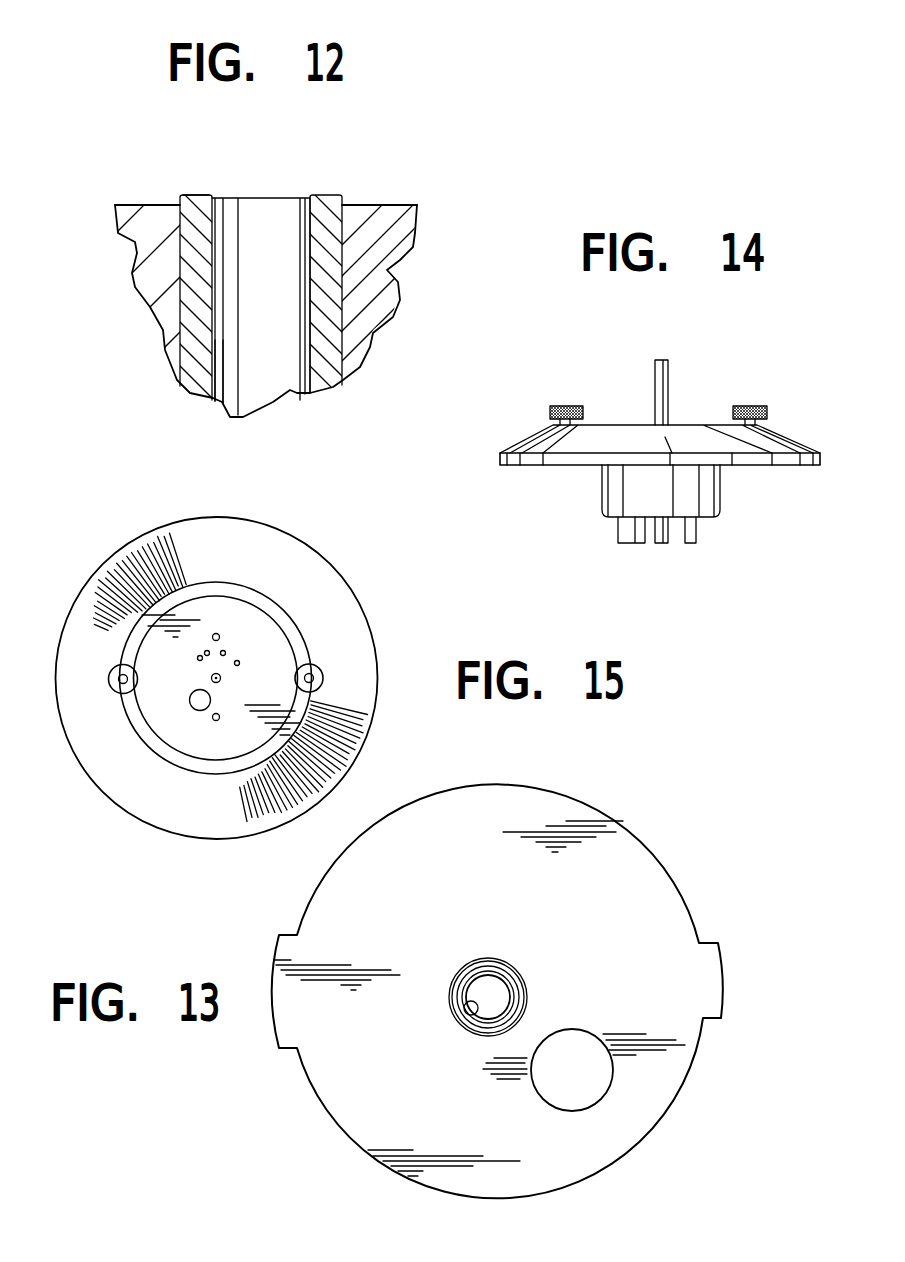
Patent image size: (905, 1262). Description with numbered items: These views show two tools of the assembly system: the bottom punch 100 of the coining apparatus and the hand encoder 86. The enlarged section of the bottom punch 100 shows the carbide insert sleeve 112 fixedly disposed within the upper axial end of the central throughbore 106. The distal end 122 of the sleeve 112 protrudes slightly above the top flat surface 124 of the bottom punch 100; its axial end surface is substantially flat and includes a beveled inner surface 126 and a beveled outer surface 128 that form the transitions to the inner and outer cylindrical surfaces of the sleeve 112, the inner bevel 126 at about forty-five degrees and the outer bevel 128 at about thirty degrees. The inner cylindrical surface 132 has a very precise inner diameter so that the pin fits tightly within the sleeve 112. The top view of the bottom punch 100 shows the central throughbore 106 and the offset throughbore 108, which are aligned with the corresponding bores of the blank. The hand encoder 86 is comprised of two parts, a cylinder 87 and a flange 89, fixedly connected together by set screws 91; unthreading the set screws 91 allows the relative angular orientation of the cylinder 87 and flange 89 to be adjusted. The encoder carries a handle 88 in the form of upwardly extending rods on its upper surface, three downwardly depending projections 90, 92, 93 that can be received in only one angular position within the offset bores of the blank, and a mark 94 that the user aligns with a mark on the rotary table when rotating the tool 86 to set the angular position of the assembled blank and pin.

In FIG. 14, the hand encoder 86 is at (613, 410).
In FIG. 15, the hand encoder 86 is at (138, 524).
In FIG. 15, the cylinder 87 is at (292, 656).
In FIG. 14, the handle 88 is at (669, 364).
In FIG. 15, the handle 88 is at (217, 633).
In FIG. 15, the flange 89 is at (130, 798).
In FIG. 14, the downwardly depending projection 90 is at (694, 530).
In FIG. 14, the set screws 91 is at (562, 406).
In FIG. 15, the set screws 91 is at (109, 678).
In FIG. 14, the downwardly depending projection 92 is at (624, 538).
In FIG. 14, the downwardly depending projection 93 is at (661, 534).
In FIG. 15, the mark 94 is at (310, 590).
In FIG. 12, the bottom punch 100 is at (142, 282).
In FIG. 13, the bottom punch 100 is at (673, 909).
In FIG. 13, the central throughbore 106 is at (471, 1007).
In FIG. 13, the offset throughbore 108 is at (606, 1087).
In FIG. 12, the carbide insert sleeve 112 is at (336, 300).
In FIG. 12, the distal end 122 is at (190, 194).
In FIG. 13, the distal end 122 is at (466, 978).
In FIG. 12, the top flat surface 124 is at (383, 205).
In FIG. 12, the beveled inner surface 126 is at (216, 198).
In FIG. 13, the beveled inner surface 126 is at (488, 1026).
In FIG. 12, the beveled outer surface 128 is at (182, 196).
In FIG. 13, the beveled outer surface 128 is at (502, 965).
In FIG. 12, the inner cylindrical surface 132 is at (222, 364).